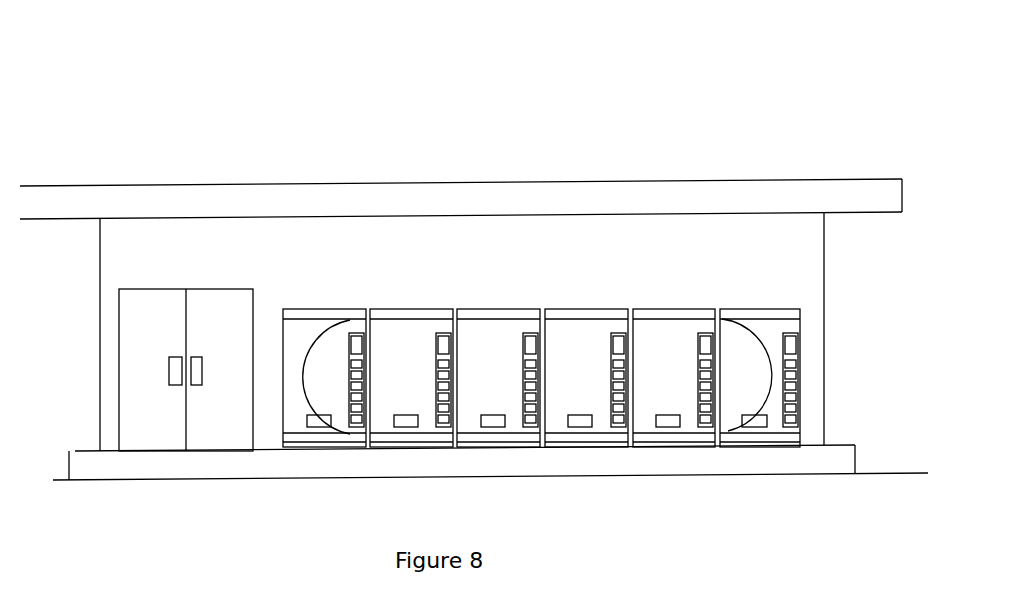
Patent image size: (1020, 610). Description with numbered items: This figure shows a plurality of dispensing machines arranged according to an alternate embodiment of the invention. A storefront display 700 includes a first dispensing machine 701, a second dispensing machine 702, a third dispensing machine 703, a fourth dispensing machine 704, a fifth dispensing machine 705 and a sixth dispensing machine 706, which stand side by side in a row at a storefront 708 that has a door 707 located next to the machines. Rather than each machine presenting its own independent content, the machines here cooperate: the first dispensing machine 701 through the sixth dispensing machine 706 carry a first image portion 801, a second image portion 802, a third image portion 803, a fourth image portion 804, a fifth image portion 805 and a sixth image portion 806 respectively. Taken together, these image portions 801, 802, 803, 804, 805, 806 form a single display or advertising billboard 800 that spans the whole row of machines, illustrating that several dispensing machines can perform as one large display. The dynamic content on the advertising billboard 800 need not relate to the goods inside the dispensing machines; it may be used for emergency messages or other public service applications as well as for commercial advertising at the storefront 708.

The storefront display 700 is at (583, 154).
The first dispensing machine 701 is at (324, 362).
The second dispensing machine 702 is at (411, 362).
The third dispensing machine 703 is at (498, 362).
The fourth dispensing machine 704 is at (586, 361).
The fifth dispensing machine 705 is at (674, 361).
The sixth dispensing machine 706 is at (760, 360).
The door 707 is at (172, 331).
The storefront 708 is at (414, 244).
The advertising billboard 800 is at (800, 480).
The first image portion 801 is at (339, 364).
The second image portion 802 is at (424, 337).
The third image portion 803 is at (511, 337).
The fourth image portion 804 is at (598, 337).
The fifth image portion 805 is at (685, 337).
The sixth image portion 806 is at (753, 360).